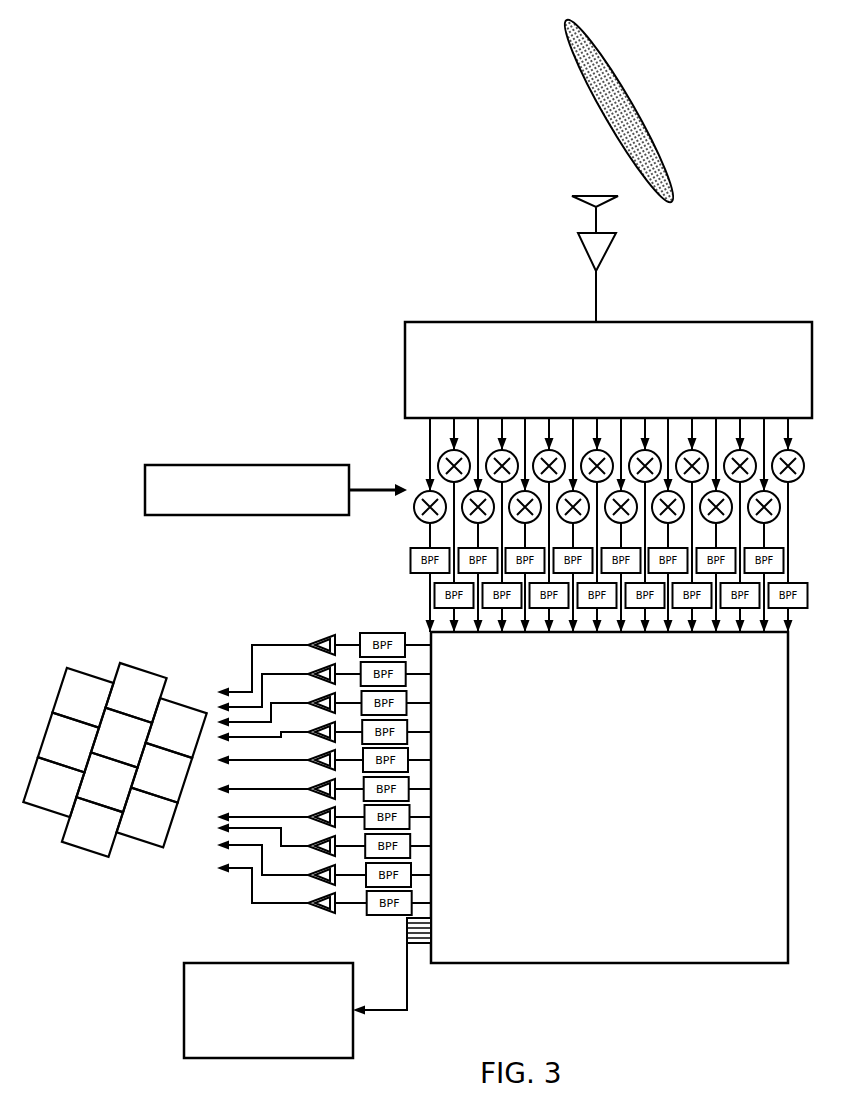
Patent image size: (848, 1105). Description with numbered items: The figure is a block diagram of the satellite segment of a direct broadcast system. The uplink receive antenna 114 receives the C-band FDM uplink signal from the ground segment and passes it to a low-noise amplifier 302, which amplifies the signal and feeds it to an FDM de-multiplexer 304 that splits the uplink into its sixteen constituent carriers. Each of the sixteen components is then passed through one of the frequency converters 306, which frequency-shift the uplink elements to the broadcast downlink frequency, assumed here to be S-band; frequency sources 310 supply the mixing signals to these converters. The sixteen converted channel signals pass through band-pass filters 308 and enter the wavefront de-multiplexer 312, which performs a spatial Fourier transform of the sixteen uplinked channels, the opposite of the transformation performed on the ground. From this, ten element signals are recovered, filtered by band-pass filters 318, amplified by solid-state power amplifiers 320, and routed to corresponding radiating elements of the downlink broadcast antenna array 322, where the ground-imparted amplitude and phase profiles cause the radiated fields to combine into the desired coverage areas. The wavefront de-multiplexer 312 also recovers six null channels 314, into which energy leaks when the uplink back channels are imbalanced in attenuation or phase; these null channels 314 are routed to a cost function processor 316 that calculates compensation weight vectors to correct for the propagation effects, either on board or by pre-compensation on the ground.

The uplink receive antenna 114 is at (620, 137).
The low-noise amplifier 302 is at (588, 250).
The FDM de-multiplexer 304 is at (608, 370).
The frequency converter 306 is at (424, 492).
The band-pass filter 308 is at (414, 548).
The frequency sources 310 is at (190, 465).
The wavefront de-multiplexer 312 is at (609, 791).
The null channel 314 is at (407, 950).
The cost function processor 316 is at (184, 980).
The band-pass filter 318 is at (375, 633).
The solid-state power amplifier 320 is at (320, 640).
The downlink broadcast antenna array 322 is at (152, 653).